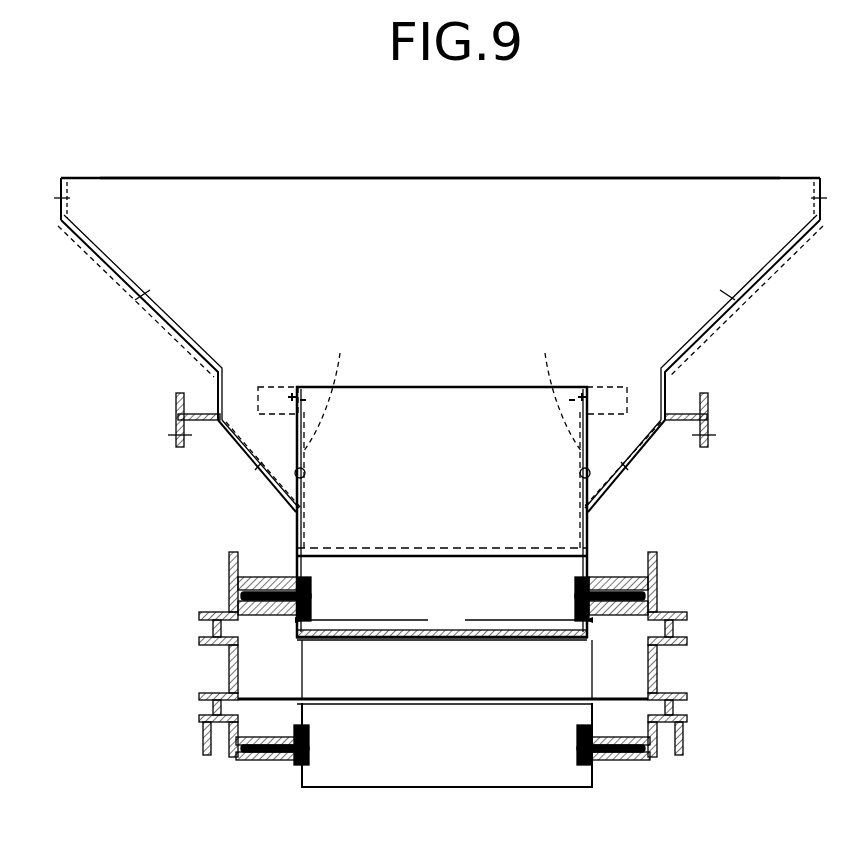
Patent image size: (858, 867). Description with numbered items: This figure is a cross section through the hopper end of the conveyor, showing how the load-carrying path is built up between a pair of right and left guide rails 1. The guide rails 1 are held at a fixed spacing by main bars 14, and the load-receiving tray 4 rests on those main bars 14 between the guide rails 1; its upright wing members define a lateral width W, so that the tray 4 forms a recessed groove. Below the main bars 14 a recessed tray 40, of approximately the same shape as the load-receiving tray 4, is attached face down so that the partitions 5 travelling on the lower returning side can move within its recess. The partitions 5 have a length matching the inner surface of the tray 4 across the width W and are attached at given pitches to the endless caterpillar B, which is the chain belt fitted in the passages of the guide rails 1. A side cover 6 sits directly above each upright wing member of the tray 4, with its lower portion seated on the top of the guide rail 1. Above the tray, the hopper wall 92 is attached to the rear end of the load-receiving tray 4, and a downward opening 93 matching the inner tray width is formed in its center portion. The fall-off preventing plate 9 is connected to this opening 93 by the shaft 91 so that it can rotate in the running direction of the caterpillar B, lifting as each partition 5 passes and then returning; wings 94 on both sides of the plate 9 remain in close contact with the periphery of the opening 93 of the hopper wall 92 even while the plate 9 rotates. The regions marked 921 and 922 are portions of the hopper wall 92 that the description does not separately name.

The fall-off preventing plate 9 is at (252, 176).
The hopper wall 92 is at (360, 196).
The inner box of hopper 921 is at (436, 395).
The lower fixing portion of hopper 922 is at (288, 498).
The downward opening 93 is at (191, 347).
The shaft 91 is at (286, 385).
The wings 94 is at (442, 388).
The side cover 6 is at (275, 486).
The partitions 5 is at (381, 546).
The lateral width W is at (444, 618).
The guide rail 1 is at (230, 592).
The endless caterpillar B is at (262, 576).
The load-receiving tray 4 is at (394, 642).
The recessed tray 40 is at (394, 702).
The main bars 14 is at (338, 682).